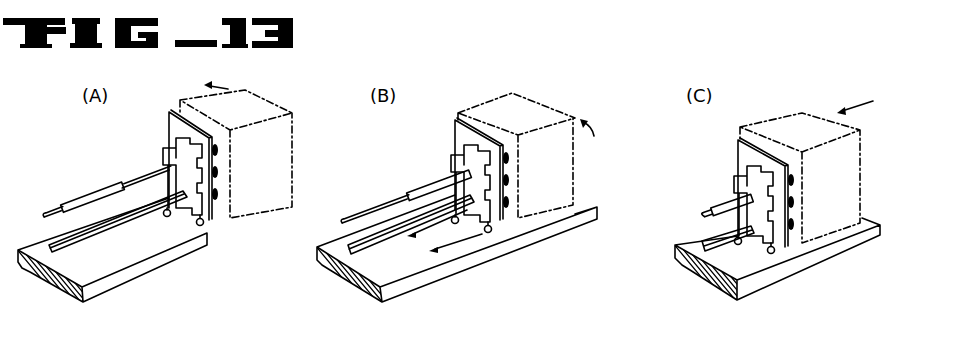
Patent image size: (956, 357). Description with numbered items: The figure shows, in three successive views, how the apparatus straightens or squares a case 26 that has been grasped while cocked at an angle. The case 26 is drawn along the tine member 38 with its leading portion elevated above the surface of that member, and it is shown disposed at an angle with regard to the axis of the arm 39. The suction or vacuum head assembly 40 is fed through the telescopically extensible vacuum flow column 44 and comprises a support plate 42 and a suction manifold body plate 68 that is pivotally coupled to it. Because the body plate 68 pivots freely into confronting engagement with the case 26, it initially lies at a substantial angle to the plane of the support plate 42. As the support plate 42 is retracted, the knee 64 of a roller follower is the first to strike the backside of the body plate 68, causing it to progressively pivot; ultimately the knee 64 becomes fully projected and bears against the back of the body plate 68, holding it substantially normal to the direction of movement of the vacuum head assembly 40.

The case 26 is at (272, 167).
The tine member 38 is at (112, 282).
The arm 39 is at (110, 226).
The vacuum head assembly 40 is at (226, 234).
The support plate 42 is at (176, 160).
The telescopically extensible vacuum flow column 44 is at (52, 209).
The knee 64 is at (490, 172).
The suction manifold body plate 68 is at (170, 120).